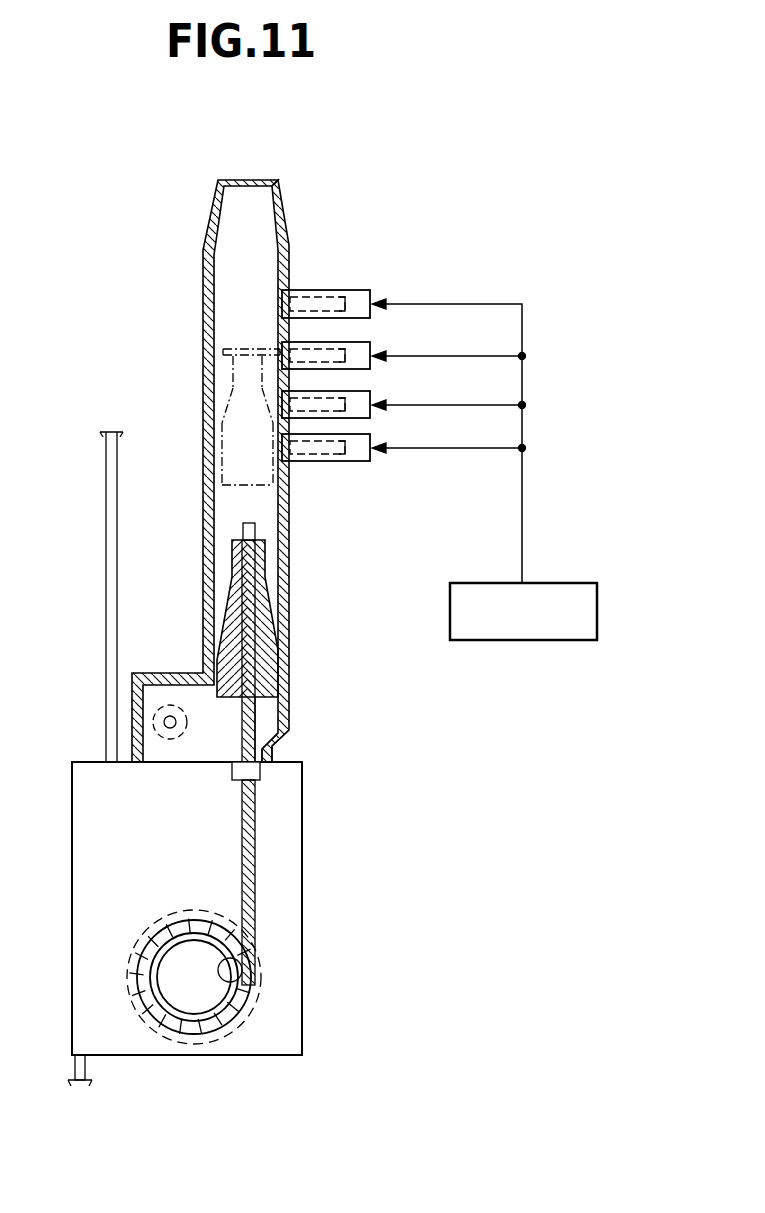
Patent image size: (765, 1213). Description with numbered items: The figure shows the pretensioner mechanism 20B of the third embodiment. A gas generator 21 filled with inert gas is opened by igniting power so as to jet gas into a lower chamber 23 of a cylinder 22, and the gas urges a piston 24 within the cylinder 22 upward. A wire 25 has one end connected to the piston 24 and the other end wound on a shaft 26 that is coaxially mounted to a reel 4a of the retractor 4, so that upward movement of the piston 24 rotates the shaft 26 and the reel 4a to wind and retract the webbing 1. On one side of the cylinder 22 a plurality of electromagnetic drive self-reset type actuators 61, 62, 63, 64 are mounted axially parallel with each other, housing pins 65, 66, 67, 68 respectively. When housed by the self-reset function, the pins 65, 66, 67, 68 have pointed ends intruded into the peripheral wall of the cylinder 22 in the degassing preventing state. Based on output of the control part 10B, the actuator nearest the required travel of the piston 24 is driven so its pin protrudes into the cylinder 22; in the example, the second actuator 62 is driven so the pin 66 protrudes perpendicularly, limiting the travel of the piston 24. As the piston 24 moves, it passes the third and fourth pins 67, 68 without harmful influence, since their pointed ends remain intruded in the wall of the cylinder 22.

The webbing 1 is at (106, 605).
The retractor 4 is at (90, 834).
The reel 4a is at (145, 930).
The control part 10B is at (522, 640).
The pretensioner mechanism 20B is at (279, 576).
The gas generator 21 is at (168, 705).
The cylinder 22 is at (289, 238).
The lower chamber 23 is at (276, 738).
The piston 24 is at (262, 604).
The wire 25 is at (262, 722).
The shaft 26 is at (240, 984).
The actuator 61 is at (352, 270).
The actuator 62 is at (387, 341).
The actuator 63 is at (364, 398).
The actuator 64 is at (354, 475).
The pin 65 is at (327, 296).
The pin 66 is at (347, 345).
The pin 67 is at (347, 396).
The pin 68 is at (318, 457).